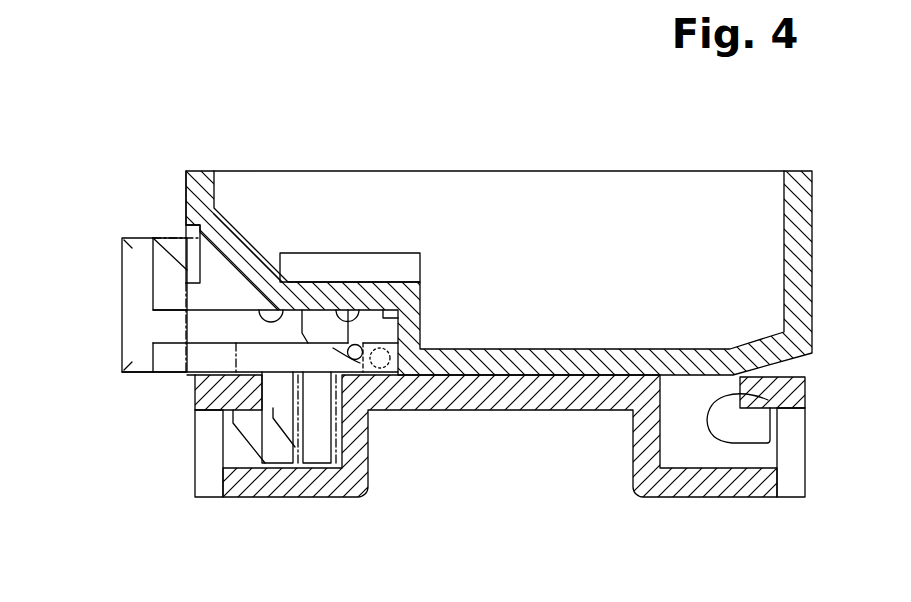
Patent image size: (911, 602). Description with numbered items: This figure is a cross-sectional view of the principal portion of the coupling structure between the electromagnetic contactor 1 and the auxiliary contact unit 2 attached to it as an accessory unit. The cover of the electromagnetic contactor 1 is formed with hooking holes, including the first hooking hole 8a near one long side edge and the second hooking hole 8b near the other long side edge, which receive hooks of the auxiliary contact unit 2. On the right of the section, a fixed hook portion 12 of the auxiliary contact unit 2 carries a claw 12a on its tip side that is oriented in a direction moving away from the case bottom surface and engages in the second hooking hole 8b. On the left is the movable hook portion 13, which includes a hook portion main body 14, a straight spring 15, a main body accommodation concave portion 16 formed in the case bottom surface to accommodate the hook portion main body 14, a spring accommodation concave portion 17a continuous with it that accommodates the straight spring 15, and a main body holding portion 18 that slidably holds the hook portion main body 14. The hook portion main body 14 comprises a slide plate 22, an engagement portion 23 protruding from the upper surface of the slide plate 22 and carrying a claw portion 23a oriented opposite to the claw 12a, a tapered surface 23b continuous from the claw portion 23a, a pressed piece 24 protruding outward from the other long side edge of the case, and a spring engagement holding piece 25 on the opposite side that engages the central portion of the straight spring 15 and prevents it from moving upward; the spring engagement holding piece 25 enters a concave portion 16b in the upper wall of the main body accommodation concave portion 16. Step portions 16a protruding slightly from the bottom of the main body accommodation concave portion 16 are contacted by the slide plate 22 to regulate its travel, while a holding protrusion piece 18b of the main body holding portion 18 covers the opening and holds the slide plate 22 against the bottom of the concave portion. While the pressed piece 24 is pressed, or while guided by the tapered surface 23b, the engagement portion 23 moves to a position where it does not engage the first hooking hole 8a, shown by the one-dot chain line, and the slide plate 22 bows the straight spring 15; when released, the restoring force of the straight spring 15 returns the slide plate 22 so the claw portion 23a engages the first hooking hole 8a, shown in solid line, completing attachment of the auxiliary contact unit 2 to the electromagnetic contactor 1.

The electromagnetic contactor 1 is at (812, 481).
The auxiliary contact unit 2 is at (747, 166).
The first hooking hole 8a is at (340, 433).
The second hooking hole 8b is at (698, 377).
The fixed hook portion 12 is at (753, 443).
The claw 12a is at (773, 402).
The movable hook portion 13 is at (141, 211).
The hook portion main body 14 is at (117, 348).
The straight spring 15 is at (422, 348).
The main body accommodation concave portion 16 is at (268, 300).
The step portion 16a is at (387, 310).
The concave portion 16b is at (460, 350).
The spring accommodation concave portion 17a is at (333, 292).
The main body holding portion 18 is at (201, 417).
The holding protrusion piece 18b is at (187, 357).
The slide plate 22 is at (168, 327).
The engagement portion 23 is at (277, 450).
The claw portion 23a is at (247, 417).
The tapered surface 23b is at (220, 460).
The pressed piece 24 is at (175, 287).
The spring engagement holding piece 25 is at (383, 380).